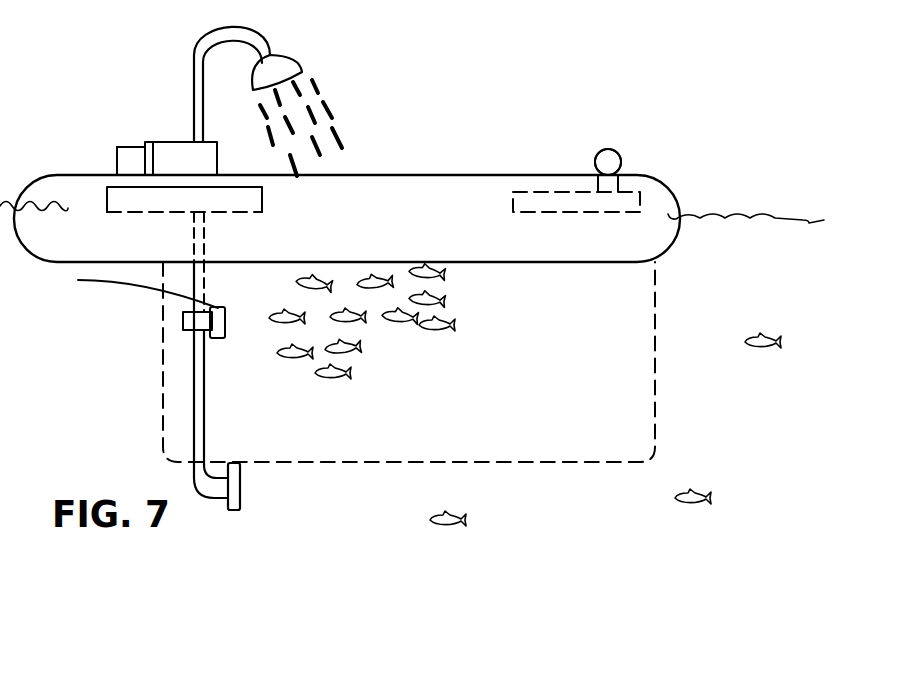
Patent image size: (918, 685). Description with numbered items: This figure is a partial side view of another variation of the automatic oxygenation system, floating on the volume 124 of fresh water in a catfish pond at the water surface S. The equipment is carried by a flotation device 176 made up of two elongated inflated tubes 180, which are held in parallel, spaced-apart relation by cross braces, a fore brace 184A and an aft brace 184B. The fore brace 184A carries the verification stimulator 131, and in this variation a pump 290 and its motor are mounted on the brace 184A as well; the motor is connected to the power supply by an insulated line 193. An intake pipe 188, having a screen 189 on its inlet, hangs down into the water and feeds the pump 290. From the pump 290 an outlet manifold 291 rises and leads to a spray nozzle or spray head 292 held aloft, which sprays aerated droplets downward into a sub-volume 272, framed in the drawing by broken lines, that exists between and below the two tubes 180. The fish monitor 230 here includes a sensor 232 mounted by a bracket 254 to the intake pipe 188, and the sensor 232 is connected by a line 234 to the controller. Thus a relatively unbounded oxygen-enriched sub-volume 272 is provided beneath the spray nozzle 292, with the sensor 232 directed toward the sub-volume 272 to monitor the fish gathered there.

The volume of fresh water 124 is at (703, 417).
The verification stimulator 131 is at (622, 158).
The flotation device 176 is at (554, 164).
The elongated inflated tubes 180 is at (678, 240).
The fore brace 184A is at (637, 198).
The aft brace 184B is at (258, 203).
The intake pipe 188 is at (193, 417).
The screen 189 is at (242, 480).
The insulated line 193 is at (128, 147).
The fish monitor 230 is at (229, 348).
The sensor 232 is at (510, 394).
The line 234 is at (131, 285).
The bracket 254 is at (185, 330).
The sub-volume 272 is at (352, 460).
The pump 290 is at (167, 142).
The outlet manifold 291 is at (266, 44).
The spray nozzle 292 is at (293, 77).
The water surface S is at (812, 222).